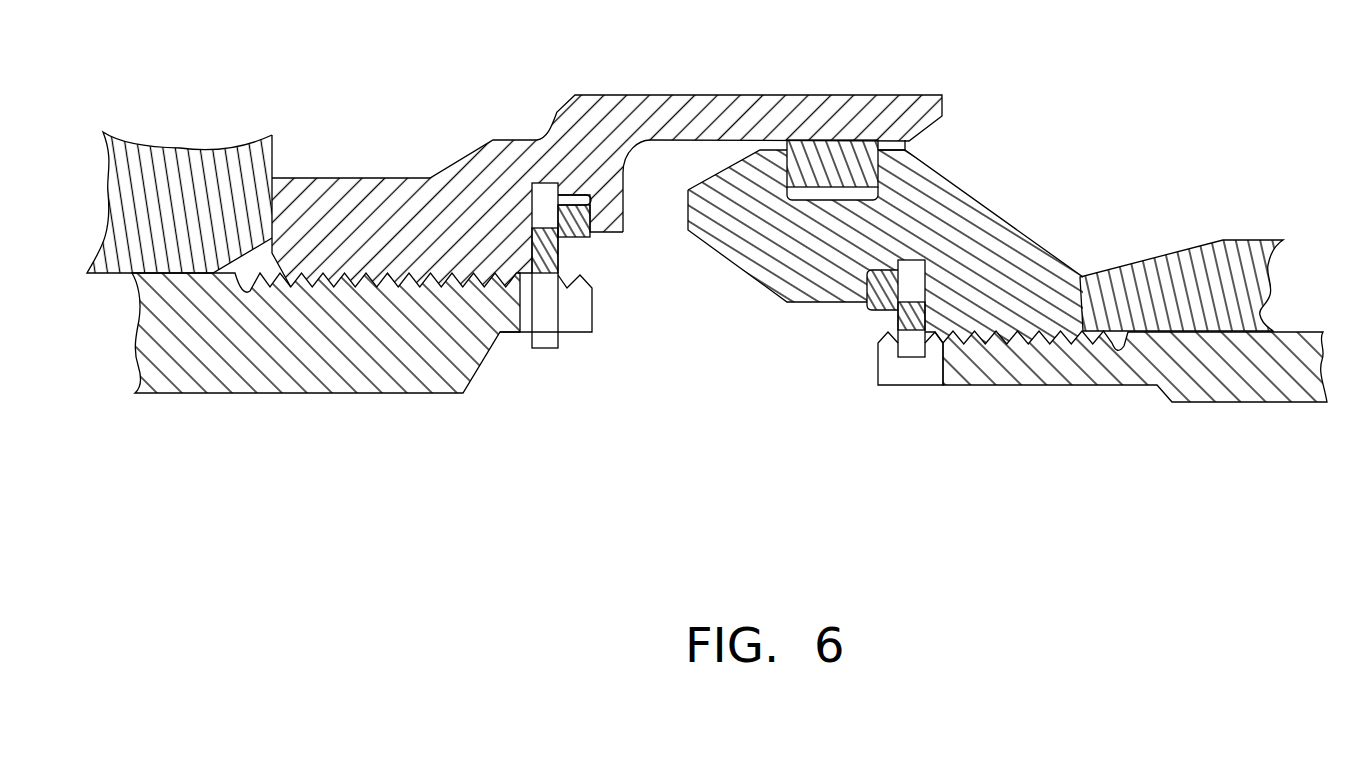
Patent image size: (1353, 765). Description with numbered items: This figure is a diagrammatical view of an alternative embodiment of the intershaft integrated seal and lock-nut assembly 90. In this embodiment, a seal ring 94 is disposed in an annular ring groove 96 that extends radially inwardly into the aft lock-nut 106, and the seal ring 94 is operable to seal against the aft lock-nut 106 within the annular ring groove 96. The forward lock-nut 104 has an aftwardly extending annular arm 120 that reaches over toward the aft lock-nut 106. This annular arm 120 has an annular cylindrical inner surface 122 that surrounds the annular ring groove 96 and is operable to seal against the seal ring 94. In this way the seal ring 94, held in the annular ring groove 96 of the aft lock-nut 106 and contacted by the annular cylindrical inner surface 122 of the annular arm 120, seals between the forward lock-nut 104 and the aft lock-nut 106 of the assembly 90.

The intershaft integrated seal and lock-nut assembly 90 is at (716, 357).
The seal ring 94 is at (862, 168).
The annular ring groove 96 is at (820, 197).
The forward lock-nut 104 is at (367, 177).
The aft lock-nut 106 is at (1016, 232).
The aftwardly extending annular arm 120 is at (673, 95).
The annular cylindrical inner surface 122 is at (645, 137).